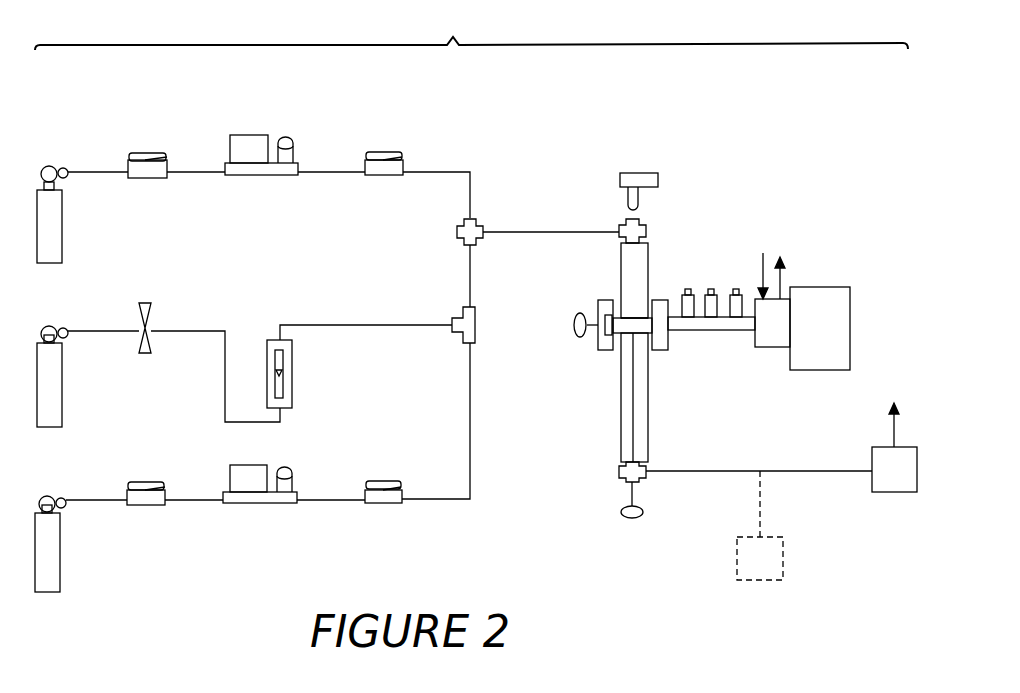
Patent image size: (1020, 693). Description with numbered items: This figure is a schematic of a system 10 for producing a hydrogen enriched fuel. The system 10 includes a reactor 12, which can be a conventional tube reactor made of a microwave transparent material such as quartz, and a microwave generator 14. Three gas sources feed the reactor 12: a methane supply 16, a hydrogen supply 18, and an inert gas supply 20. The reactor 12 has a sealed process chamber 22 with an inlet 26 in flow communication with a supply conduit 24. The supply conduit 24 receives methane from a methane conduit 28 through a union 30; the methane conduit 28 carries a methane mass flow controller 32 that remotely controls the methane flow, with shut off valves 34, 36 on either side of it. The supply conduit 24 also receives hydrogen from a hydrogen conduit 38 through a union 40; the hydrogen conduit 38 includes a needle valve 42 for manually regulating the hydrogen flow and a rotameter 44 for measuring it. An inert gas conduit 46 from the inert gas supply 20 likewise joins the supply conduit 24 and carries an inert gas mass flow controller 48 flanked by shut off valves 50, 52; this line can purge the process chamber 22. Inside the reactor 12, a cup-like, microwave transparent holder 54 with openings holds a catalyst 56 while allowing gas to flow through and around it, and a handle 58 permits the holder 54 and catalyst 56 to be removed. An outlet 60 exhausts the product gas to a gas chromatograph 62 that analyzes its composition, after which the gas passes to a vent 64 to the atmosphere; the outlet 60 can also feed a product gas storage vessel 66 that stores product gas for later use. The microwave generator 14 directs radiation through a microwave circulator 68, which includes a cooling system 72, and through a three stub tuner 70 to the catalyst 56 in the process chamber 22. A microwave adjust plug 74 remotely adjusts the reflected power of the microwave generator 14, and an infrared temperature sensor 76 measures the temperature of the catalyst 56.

The system 10 is at (471, 31).
The reactor 12 is at (648, 395).
The microwave generator 14 is at (850, 322).
The methane supply 16 is at (62, 226).
The hydrogen supply 18 is at (62, 386).
The inert gas supply 20 is at (60, 561).
The process chamber 22 is at (648, 262).
The supply conduit 24 is at (548, 232).
The inlet 26 is at (646, 226).
The methane conduit 28 is at (462, 172).
The union 30 is at (479, 226).
The methane mass flow controller 32 is at (255, 135).
The shut off valve 34 is at (158, 180).
The shut off valve 36 is at (385, 176).
The hydrogen conduit 38 is at (383, 327).
The union 40 is at (475, 325).
The needle valve 42 is at (152, 320).
The rotameter 44 is at (292, 370).
The inert gas conduit 46 is at (455, 501).
The inert gas mass flow controller 48 is at (263, 505).
The shut off valve 50 is at (157, 507).
The shut off valve 52 is at (383, 505).
The holder 54 is at (641, 300).
The catalyst 56 is at (633, 318).
The handle 58 is at (643, 514).
The outlet 60 is at (645, 480).
The gas chromatograph 62 is at (893, 492).
The vent 64 is at (897, 432).
The product gas storage vessel 66 is at (782, 580).
The microwave circulator 68 is at (775, 348).
The three stub tuner 70 is at (690, 293).
The cooling system 72 is at (763, 253).
The microwave adjust plug 74 is at (600, 305).
The infrared temperature sensor 76 is at (650, 175).